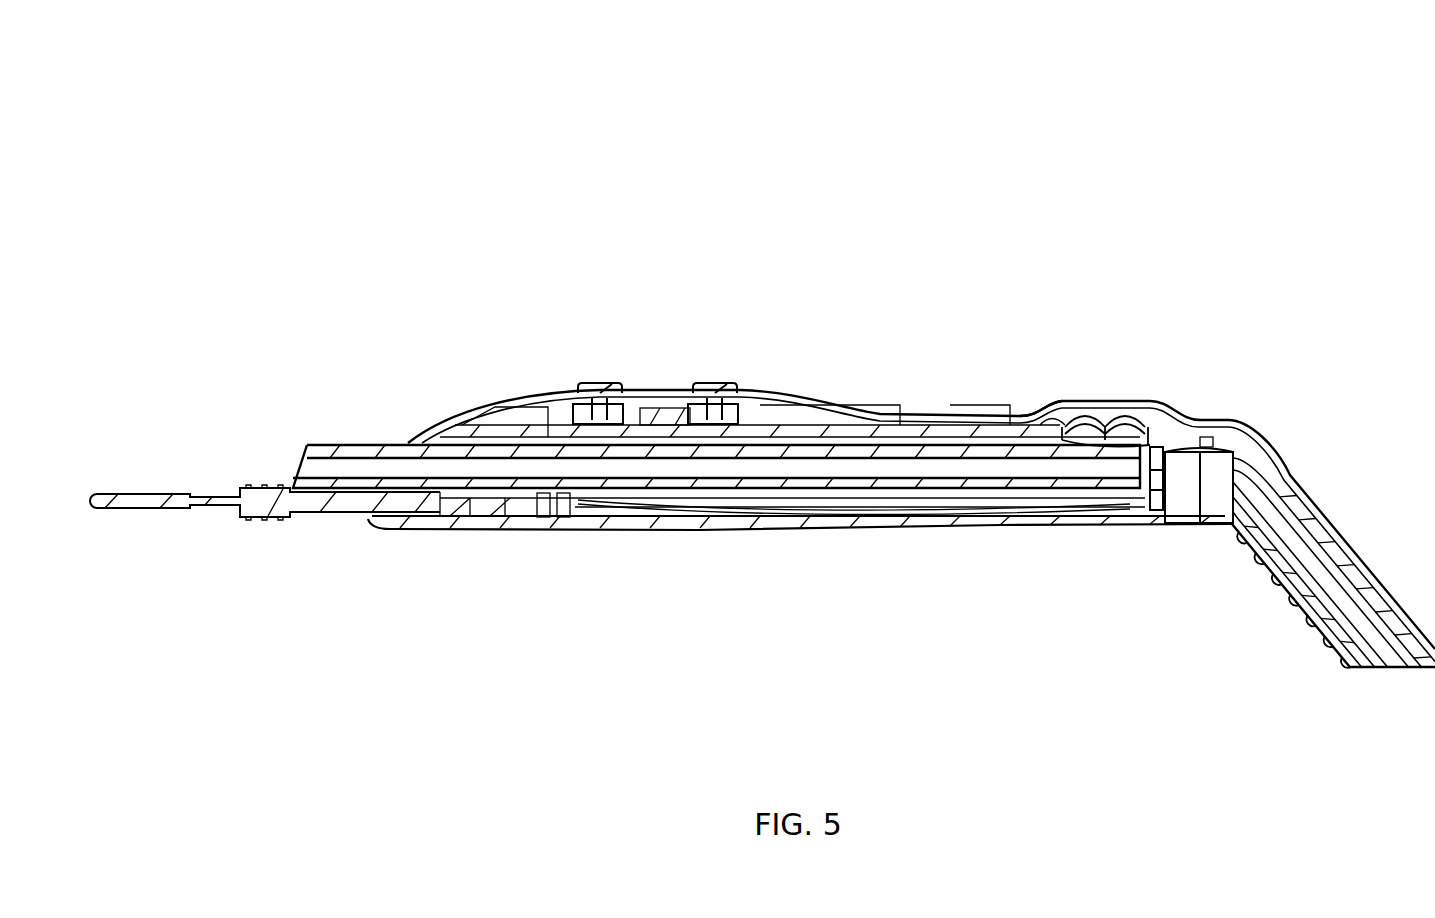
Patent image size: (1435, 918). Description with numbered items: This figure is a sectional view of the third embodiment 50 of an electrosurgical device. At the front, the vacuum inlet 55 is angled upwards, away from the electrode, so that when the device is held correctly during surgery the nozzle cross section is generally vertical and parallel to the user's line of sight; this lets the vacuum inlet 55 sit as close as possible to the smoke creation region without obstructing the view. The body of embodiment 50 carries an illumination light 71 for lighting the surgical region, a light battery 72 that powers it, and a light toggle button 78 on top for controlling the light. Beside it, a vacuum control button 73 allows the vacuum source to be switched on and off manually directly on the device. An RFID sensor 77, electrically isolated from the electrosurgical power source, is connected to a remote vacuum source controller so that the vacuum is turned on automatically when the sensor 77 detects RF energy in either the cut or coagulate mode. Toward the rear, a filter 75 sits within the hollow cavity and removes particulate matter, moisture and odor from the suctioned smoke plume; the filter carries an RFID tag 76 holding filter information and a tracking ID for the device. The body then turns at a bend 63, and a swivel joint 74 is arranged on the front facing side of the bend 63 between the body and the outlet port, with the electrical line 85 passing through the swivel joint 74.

The third embodiment 50 is at (404, 186).
The vacuum inlet 55 is at (300, 452).
The bend 63 is at (1235, 420).
The illumination light 71 is at (380, 522).
The light battery 72 is at (655, 415).
The vacuum control button 73 is at (720, 378).
The swivel joint 74 is at (1205, 543).
The filter 75 is at (1112, 412).
The RFID tag 76 is at (1050, 410).
The RFID sensor 77 is at (465, 410).
The light toggle button 78 is at (606, 368).
The electrical line 85 is at (1378, 632).